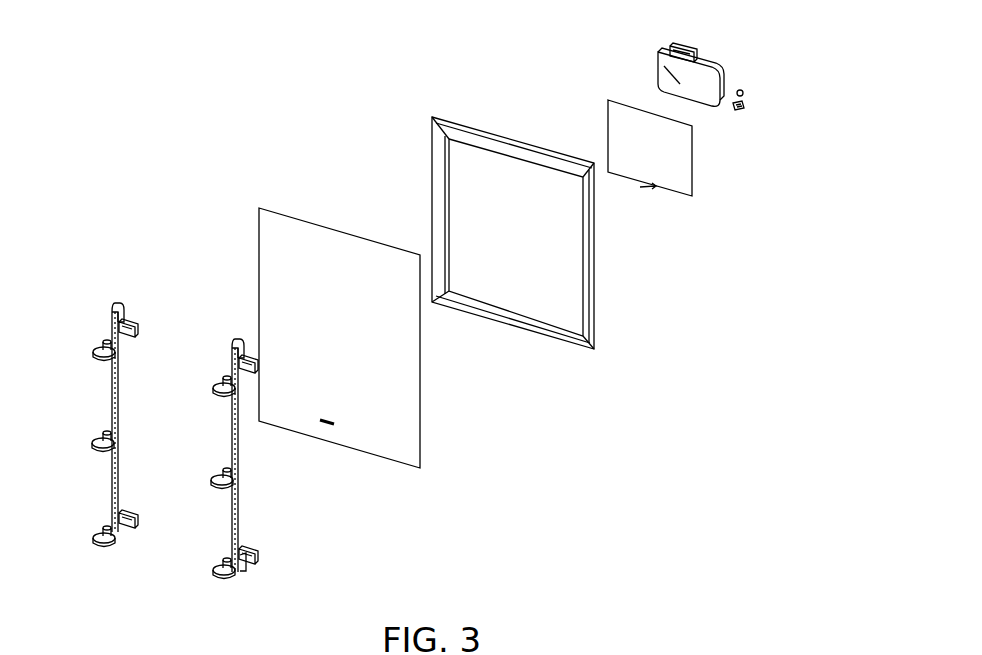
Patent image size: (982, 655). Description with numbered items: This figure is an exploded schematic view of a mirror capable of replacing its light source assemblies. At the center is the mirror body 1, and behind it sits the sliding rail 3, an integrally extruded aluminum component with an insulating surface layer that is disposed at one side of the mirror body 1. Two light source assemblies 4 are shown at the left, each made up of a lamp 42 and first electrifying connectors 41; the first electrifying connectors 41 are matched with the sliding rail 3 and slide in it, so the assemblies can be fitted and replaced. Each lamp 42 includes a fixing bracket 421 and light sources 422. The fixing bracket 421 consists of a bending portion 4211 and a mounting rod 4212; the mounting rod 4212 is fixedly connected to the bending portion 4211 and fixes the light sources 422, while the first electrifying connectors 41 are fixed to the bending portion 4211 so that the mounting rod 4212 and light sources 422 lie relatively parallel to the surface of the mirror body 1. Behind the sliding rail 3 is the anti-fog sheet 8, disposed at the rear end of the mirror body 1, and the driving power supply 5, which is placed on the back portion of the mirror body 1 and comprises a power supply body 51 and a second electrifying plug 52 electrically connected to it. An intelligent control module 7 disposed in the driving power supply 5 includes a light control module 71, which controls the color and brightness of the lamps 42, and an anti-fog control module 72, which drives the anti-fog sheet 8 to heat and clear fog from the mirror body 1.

The mirror body 1 is at (287, 245).
The sliding rail 3 is at (497, 140).
The light source assembly 4 is at (183, 434).
The first electrifying connector 41 is at (132, 334).
The lamp 42 is at (174, 434).
The fixing bracket 421 is at (187, 431).
The bending portion 4211 is at (120, 303).
The mounting rod 4212 is at (118, 395).
The light source 422 is at (96, 353).
The driving power supply 5 is at (650, 58).
The power supply body 51 is at (672, 80).
The second electrifying plug 52 is at (680, 47).
The intelligent control module 7 is at (783, 114).
The light control module 71 is at (742, 110).
The anti-fog control module 72 is at (744, 94).
The anti-fog sheet 8 is at (672, 178).